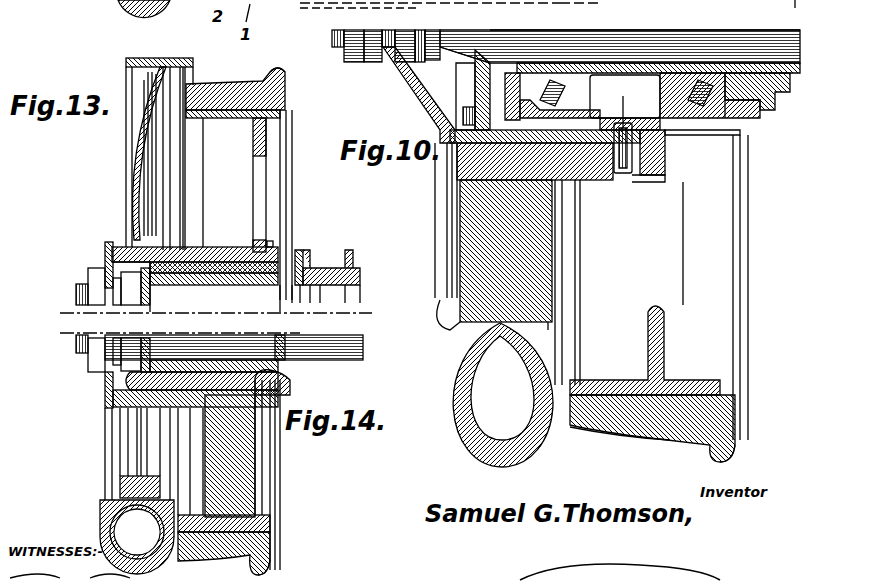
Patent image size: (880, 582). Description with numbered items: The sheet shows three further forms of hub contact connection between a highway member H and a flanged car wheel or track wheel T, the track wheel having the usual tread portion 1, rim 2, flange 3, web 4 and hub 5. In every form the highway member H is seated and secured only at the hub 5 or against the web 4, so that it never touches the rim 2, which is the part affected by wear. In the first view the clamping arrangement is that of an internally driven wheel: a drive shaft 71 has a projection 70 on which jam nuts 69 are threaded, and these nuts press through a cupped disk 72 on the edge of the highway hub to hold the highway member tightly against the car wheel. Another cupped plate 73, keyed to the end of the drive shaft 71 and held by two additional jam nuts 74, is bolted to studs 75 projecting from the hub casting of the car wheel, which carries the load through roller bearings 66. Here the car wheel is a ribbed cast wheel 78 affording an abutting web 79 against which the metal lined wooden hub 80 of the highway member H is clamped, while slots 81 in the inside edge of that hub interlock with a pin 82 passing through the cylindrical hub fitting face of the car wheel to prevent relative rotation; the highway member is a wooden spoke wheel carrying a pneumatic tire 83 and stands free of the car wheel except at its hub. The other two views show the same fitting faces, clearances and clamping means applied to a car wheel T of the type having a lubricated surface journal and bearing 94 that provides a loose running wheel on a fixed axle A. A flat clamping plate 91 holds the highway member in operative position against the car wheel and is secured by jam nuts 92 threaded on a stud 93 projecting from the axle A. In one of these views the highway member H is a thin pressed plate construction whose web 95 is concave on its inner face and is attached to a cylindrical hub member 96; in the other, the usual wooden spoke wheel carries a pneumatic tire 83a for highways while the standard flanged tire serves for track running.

In FIG. 13, the tread portion 1 is at (245, 88).
In FIG. 14, the tread portion 1 is at (219, 565).
In FIG. 10, the tread portion 1 is at (665, 444).
In FIG. 13, the rim 2 is at (210, 88).
In FIG. 14, the rim 2 is at (186, 556).
In FIG. 10, the rim 2 is at (625, 416).
In FIG. 13, the flange 3 is at (282, 76).
In FIG. 14, the flange 3 is at (278, 562).
In FIG. 10, the flange 3 is at (735, 445).
In FIG. 13, the web 4 is at (266, 168).
In FIG. 10, the web 4 is at (660, 340).
In FIG. 13, the hub 5 is at (280, 247).
In FIG. 14, the hub 5 is at (282, 386).
In FIG. 10, the hub 5 is at (720, 130).
In FIG. 10, the roller bearings 66 is at (590, 80).
In FIG. 10, the jam nuts 69 is at (360, 65).
In FIG. 10, the projection of the drive shaft 70 is at (333, 50).
In FIG. 10, the drive shaft 71 is at (548, 45).
In FIG. 10, the cupped disk 72 is at (420, 68).
In FIG. 10, the cupped plate 73 is at (472, 45).
In FIG. 10, the additional jam nuts 74 is at (392, 66).
In FIG. 10, the studs 75 is at (462, 112).
In FIG. 10, the ribbed cast wheel 78 is at (688, 237).
In FIG. 10, the abutting web 79 is at (662, 155).
In FIG. 10, the metal lined wooden hub 80 is at (600, 175).
In FIG. 10, the slots 81 is at (698, 95).
In FIG. 10, the pin 82 is at (628, 125).
In FIG. 10, the pneumatic tire 83 is at (452, 440).
In FIG. 14, the pneumatic tire 83a is at (98, 530).
In FIG. 13, the flat clamping plate 91 is at (106, 250).
In FIG. 14, the flat clamping plate 91 is at (109, 390).
In FIG. 13, the jam nuts 92 is at (96, 276).
In FIG. 14, the jam nuts 92 is at (96, 372).
In FIG. 13, the stud 93 is at (76, 298).
In FIG. 14, the stud 93 is at (76, 338).
In FIG. 13, the lubricated surface journal and bearing 94 is at (296, 257).
In FIG. 13, the web 95 is at (131, 166).
In FIG. 13, the cylindrical hub member 96 is at (205, 247).
In FIG. 14, the cylindrical hub member 96 is at (195, 383).
In FIG. 13, the fixed axle A is at (216, 299).
In FIG. 14, the fixed axle A is at (203, 345).
In FIG. 13, the highway member H is at (163, 60).
In FIG. 14, the highway member H is at (97, 464).
In FIG. 10, the highway member H is at (427, 259).
In FIG. 13, the track wheel T is at (293, 203).
In FIG. 14, the track wheel T is at (283, 519).
In FIG. 10, the track wheel T is at (747, 352).